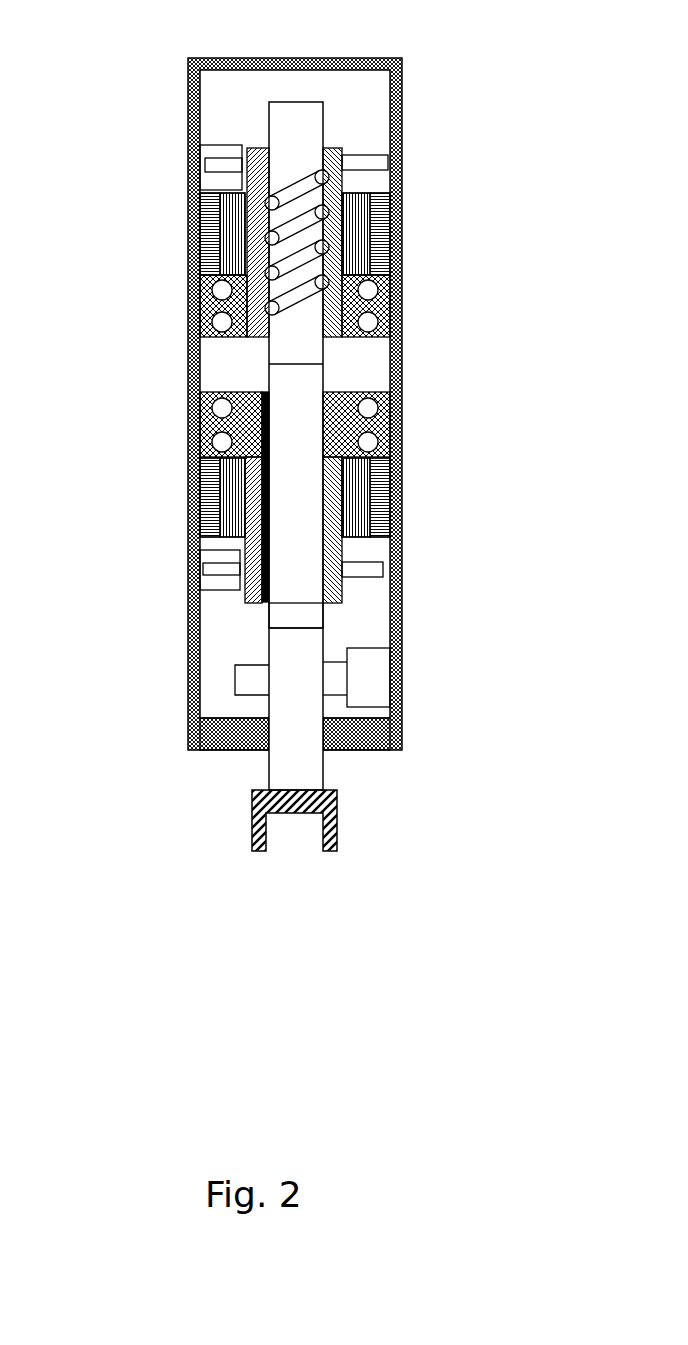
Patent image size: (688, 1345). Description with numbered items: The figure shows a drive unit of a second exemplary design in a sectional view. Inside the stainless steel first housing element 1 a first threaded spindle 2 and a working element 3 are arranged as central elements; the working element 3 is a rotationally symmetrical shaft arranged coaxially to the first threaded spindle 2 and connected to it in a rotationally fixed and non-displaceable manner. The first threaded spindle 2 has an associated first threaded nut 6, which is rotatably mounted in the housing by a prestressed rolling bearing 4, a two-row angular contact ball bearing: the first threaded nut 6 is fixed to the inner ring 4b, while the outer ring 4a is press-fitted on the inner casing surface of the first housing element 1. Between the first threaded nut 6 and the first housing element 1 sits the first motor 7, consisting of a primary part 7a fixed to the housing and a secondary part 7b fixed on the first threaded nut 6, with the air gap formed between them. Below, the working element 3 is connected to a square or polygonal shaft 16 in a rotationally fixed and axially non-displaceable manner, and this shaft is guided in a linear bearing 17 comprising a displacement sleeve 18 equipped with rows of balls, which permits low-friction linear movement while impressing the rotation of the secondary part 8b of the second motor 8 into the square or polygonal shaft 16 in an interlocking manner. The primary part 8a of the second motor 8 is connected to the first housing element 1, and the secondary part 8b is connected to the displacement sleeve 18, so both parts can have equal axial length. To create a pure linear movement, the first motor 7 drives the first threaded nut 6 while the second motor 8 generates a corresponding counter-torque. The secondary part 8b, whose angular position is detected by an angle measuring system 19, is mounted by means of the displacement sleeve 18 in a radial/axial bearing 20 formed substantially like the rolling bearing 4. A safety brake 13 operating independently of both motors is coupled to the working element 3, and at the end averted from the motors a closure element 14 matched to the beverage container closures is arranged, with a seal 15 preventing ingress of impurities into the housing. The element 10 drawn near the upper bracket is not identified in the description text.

The first housing element 1 is at (195, 70).
The first threaded spindle 2 is at (290, 121).
The working element 3 is at (293, 672).
The rolling bearing 4 is at (298, 287).
The outer ring 4a is at (380, 308).
The inner ring 4b is at (356, 284).
The first threaded nut 6 is at (253, 186).
The first motor 7 is at (78, 180).
The primary part 7a is at (210, 261).
The secondary part 7b is at (237, 227).
The second motor 8 is at (88, 443).
The primary part 8a is at (207, 518).
The secondary part 8b is at (232, 498).
The sensor bracket 10 is at (226, 153).
The safety brake 13 is at (367, 670).
The closure element 14 is at (290, 831).
The seal 15 is at (265, 737).
The square or polygonal shaft 16 is at (293, 607).
The linear bearing 17 is at (268, 472).
The displacement sleeve 18 is at (331, 500).
The angle measuring system 19 is at (217, 572).
The radial/axial bearing 20 is at (218, 413).